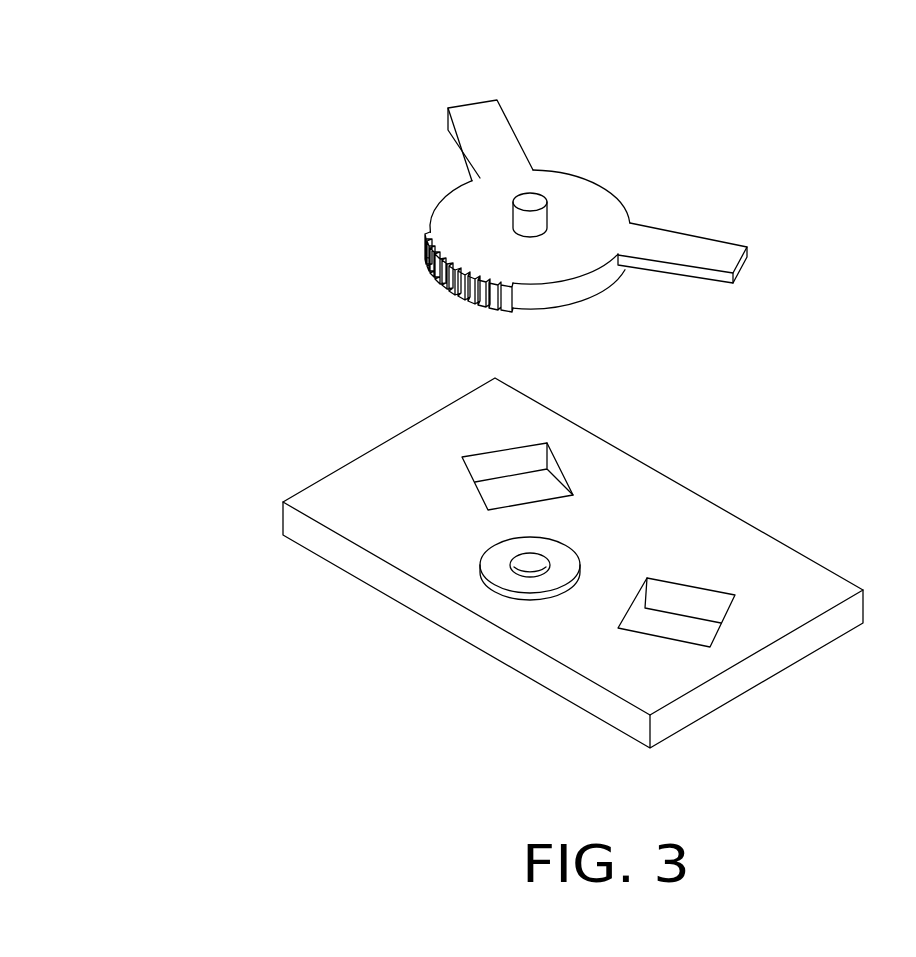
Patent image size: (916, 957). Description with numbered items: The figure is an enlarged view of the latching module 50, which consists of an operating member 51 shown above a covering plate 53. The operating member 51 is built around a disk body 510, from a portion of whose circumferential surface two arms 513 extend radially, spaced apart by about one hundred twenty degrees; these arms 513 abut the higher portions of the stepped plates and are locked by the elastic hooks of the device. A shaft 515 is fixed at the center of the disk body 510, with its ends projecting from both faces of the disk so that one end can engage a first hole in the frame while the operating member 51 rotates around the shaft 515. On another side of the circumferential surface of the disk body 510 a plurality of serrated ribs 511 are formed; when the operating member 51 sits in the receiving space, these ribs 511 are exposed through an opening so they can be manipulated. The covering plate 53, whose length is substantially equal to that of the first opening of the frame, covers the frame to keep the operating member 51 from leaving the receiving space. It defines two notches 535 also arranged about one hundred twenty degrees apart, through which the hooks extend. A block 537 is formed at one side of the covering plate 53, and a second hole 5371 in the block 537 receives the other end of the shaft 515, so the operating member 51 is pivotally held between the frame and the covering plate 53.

The latching module 50 is at (145, 73).
The operating member 51 is at (413, 193).
The disk body 510 is at (558, 253).
The serrated ribs 511 is at (447, 275).
The arms 513 is at (477, 130).
The shaft 515 is at (532, 202).
The covering plate 53 is at (333, 438).
The notches 535 is at (532, 495).
The block 537 is at (497, 560).
The second hole 5371 is at (533, 565).